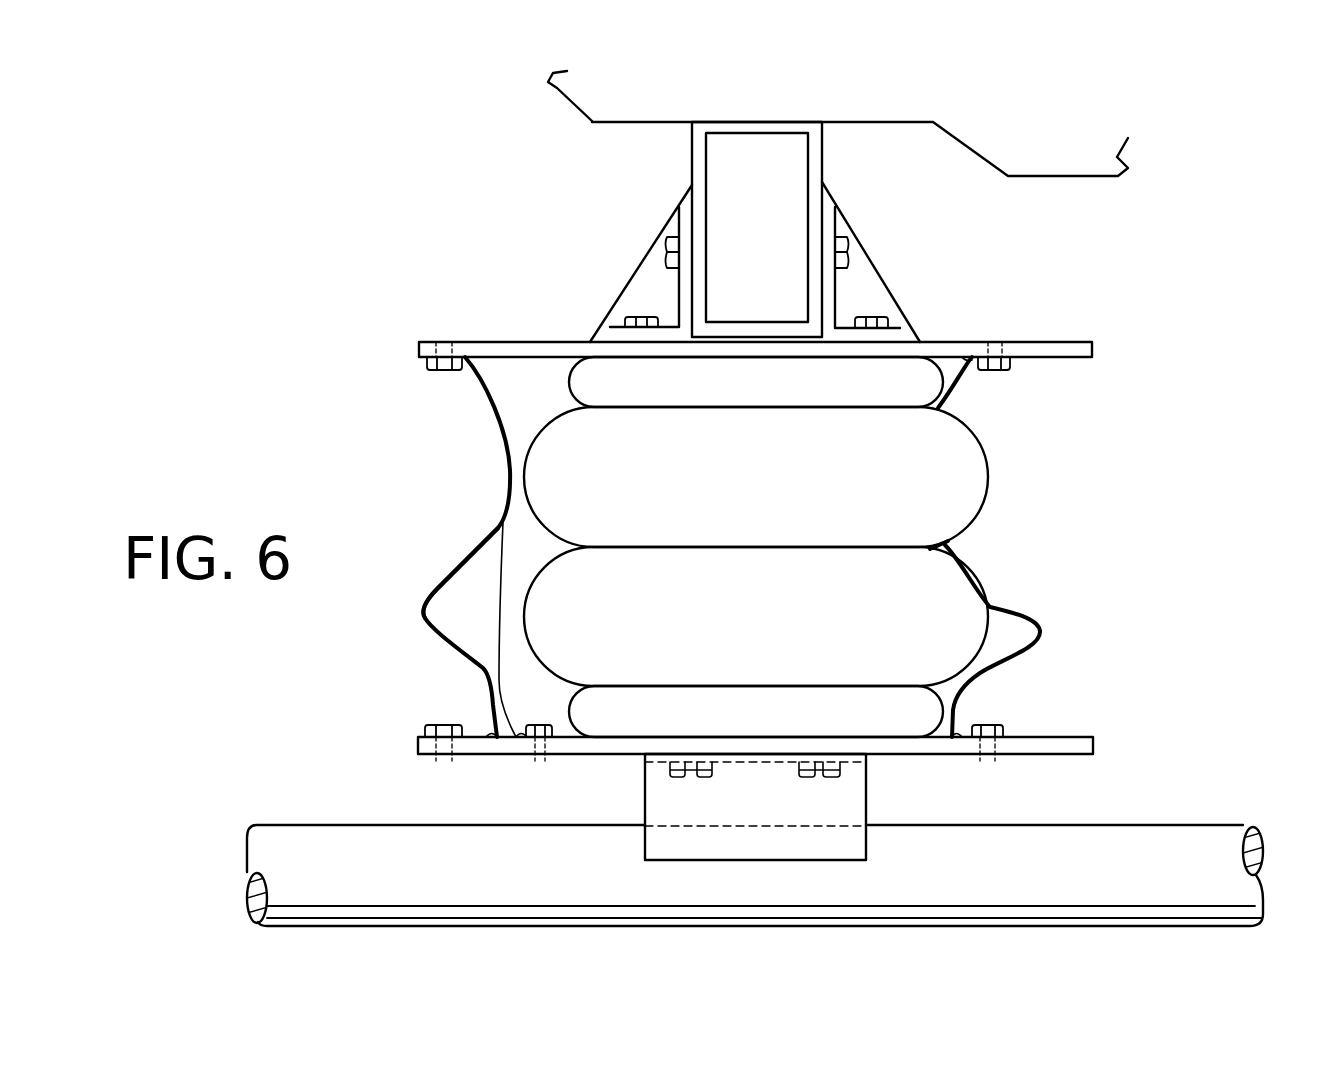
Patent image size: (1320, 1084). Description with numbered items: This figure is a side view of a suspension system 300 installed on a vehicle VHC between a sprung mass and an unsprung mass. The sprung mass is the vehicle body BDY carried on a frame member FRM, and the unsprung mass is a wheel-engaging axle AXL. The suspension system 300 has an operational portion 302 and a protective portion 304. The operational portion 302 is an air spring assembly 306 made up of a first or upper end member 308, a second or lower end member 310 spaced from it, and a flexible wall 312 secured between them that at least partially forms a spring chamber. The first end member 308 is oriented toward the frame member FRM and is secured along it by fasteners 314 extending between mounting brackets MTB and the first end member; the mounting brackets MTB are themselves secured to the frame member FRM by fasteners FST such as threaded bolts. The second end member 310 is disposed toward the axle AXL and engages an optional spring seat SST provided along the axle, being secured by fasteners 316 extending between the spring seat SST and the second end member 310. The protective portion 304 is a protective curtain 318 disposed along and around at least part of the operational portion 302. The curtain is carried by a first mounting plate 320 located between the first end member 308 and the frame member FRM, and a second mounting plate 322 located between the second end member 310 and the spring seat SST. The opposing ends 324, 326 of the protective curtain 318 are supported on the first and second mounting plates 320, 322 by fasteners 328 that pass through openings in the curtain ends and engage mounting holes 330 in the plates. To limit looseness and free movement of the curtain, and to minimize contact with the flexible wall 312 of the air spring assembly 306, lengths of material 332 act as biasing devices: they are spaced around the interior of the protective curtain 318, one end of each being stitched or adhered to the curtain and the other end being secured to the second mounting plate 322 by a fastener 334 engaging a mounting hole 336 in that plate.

The suspension system 300 is at (335, 333).
The operational portion 302 is at (540, 390).
The protective portion 304 is at (372, 540).
The air spring assembly 306 is at (832, 505).
The first end member 308 is at (767, 372).
The second end member 310 is at (677, 710).
The flexible wall 312 is at (970, 528).
The fasteners 314 is at (640, 316).
The fasteners 316 is at (670, 768).
The protective curtain 318 is at (458, 557).
The first mounting plate 320 is at (1050, 342).
The second mounting plate 322 is at (1065, 752).
The end of protective curtain 324 is at (1005, 405).
The end of protective curtain 326 is at (1003, 677).
The fasteners 328 is at (443, 371).
The mounting holes 330 is at (442, 338).
The lengths of material 332 is at (420, 613).
The fastener 334 is at (537, 725).
The mounting hole 336 is at (538, 758).
The vehicle VHC is at (555, 110).
The vehicle body BDY is at (972, 147).
The frame member FRM is at (822, 176).
The fasteners FST is at (669, 237).
The mounting brackets MTB is at (645, 258).
The axle AXL is at (283, 840).
The spring seat SST is at (688, 810).